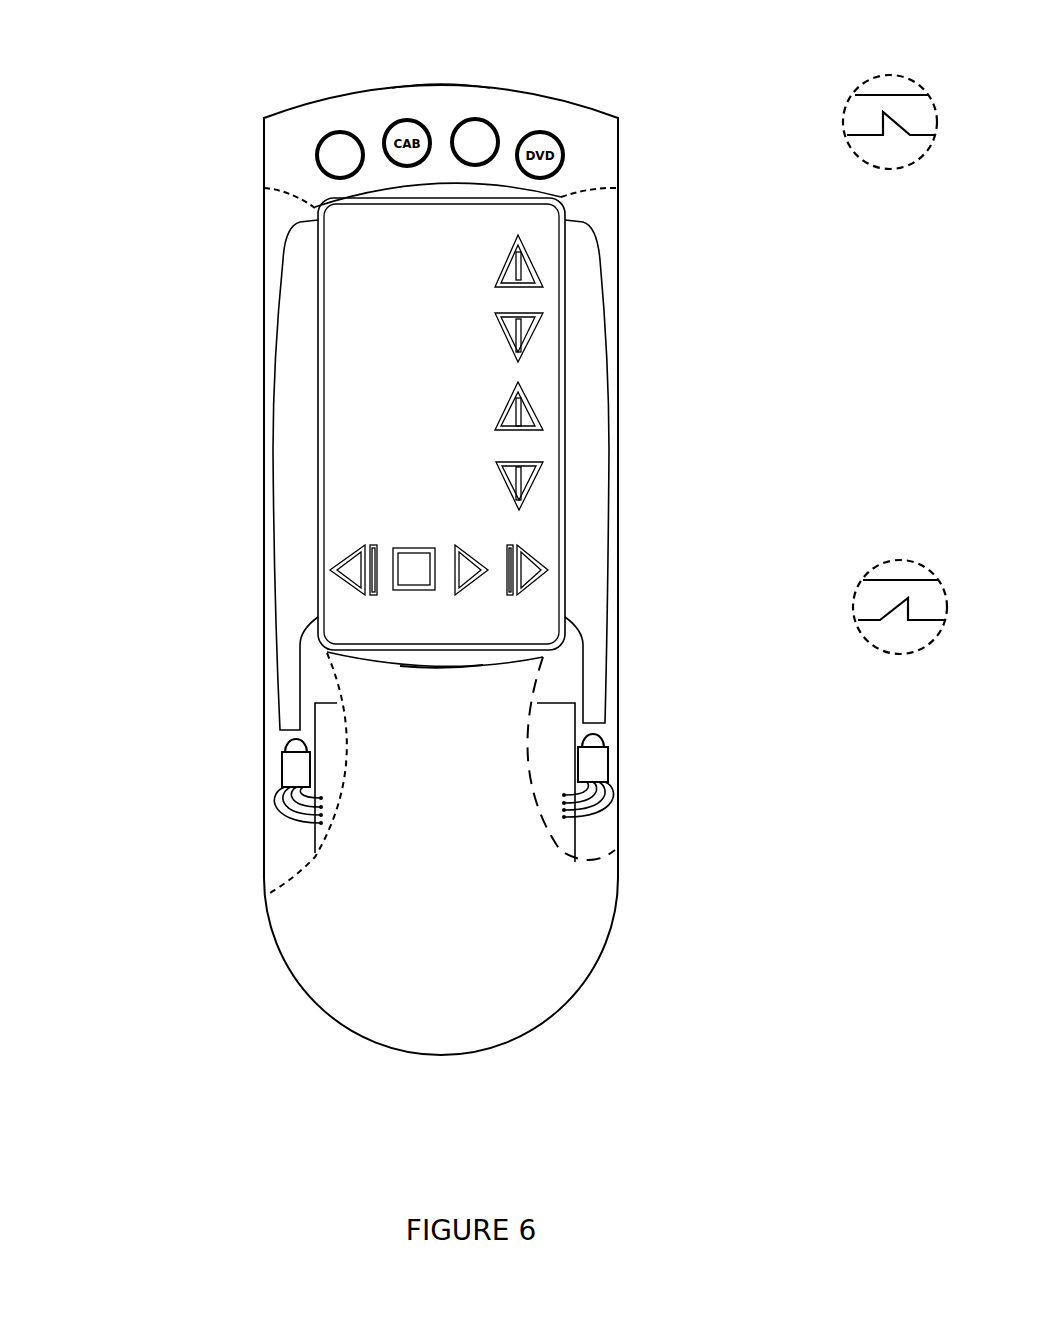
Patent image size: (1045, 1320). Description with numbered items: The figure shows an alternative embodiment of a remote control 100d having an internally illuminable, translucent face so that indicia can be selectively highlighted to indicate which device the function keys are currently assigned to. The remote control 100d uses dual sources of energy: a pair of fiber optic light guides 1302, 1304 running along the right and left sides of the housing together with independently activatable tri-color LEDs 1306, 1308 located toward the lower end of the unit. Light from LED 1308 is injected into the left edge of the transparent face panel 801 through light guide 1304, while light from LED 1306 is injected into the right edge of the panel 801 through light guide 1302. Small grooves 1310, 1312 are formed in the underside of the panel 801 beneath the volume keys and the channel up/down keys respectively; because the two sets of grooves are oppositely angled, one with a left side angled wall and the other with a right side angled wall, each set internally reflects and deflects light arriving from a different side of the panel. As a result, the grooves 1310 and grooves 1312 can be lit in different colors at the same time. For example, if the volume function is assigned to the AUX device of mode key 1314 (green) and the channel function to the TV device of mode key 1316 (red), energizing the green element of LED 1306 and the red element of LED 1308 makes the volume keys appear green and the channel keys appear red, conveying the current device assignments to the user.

The remote control 100d is at (467, 580).
The transparent face panel 801 is at (347, 288).
The light guide 1302 is at (590, 378).
The light guide 1304 is at (292, 468).
The tri-color LED 1306 is at (593, 762).
The tri-color LED 1308 is at (290, 770).
The grooves 1310 is at (520, 267).
The grooves 1312 is at (540, 428).
The mode key 1314 is at (480, 120).
The mode key 1316 is at (330, 132).